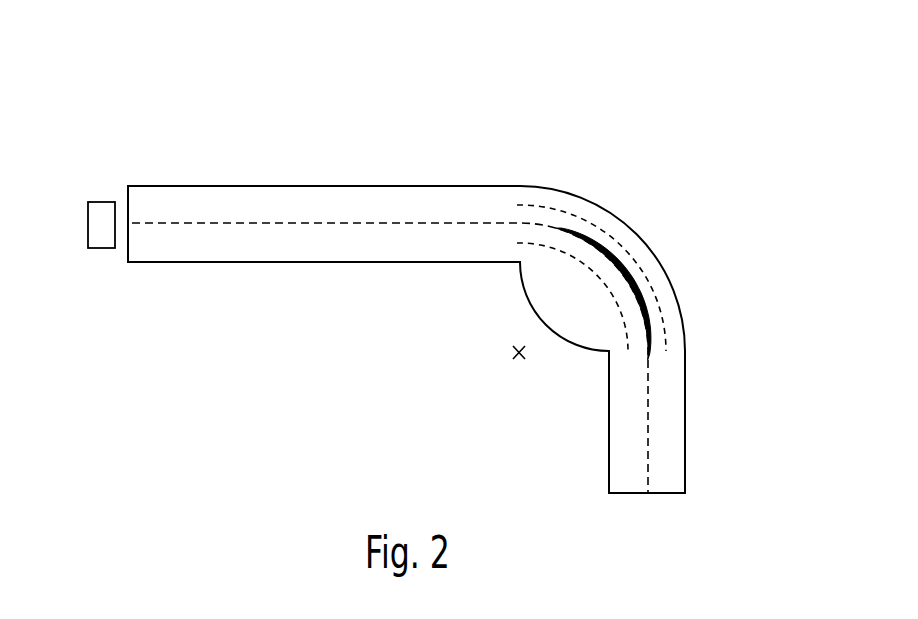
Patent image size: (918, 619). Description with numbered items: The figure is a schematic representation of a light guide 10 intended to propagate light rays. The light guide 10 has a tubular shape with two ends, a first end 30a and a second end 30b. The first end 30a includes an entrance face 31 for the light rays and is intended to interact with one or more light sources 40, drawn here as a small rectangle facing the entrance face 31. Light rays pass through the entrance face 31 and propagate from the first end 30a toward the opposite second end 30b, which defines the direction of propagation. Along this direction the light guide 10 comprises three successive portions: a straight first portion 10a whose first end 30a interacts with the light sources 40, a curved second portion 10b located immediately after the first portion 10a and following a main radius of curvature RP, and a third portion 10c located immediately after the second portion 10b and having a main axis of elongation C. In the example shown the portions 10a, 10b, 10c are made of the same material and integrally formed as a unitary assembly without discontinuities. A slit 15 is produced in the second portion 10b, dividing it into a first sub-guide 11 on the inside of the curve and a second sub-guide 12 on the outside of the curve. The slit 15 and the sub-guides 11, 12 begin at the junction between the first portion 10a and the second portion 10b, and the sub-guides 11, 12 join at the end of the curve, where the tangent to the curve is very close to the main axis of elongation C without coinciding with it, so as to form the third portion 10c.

The light guide 10 is at (243, 186).
The first portion 10a is at (528, 285).
The second portion 10b is at (535, 286).
The third portion 10c is at (695, 343).
The first sub-guide 11 is at (552, 234).
The second sub-guide 12 is at (598, 212).
The slit 15 is at (648, 275).
The first end 30a is at (112, 267).
The second end 30b is at (580, 478).
The entrance face 31 is at (128, 205).
The light source 40 is at (93, 202).
The main radius of curvature RP is at (600, 270).
The main axis of elongation C is at (648, 418).